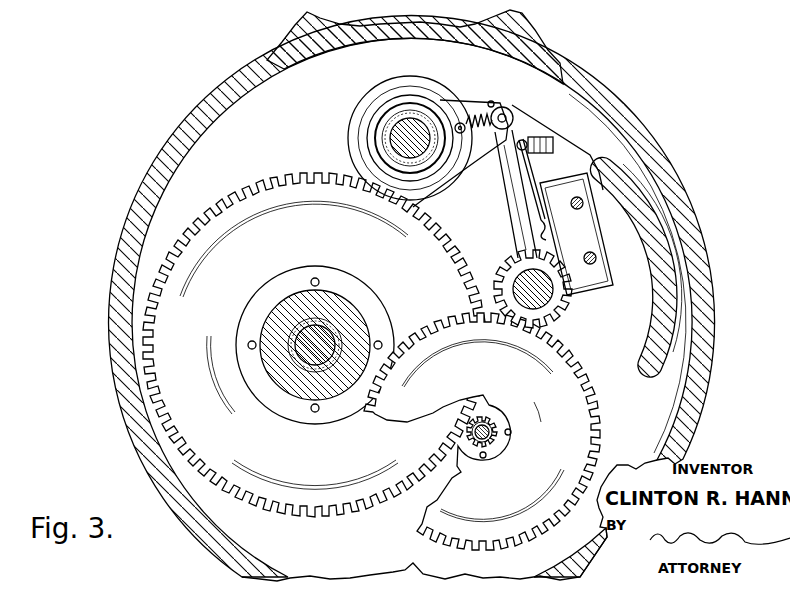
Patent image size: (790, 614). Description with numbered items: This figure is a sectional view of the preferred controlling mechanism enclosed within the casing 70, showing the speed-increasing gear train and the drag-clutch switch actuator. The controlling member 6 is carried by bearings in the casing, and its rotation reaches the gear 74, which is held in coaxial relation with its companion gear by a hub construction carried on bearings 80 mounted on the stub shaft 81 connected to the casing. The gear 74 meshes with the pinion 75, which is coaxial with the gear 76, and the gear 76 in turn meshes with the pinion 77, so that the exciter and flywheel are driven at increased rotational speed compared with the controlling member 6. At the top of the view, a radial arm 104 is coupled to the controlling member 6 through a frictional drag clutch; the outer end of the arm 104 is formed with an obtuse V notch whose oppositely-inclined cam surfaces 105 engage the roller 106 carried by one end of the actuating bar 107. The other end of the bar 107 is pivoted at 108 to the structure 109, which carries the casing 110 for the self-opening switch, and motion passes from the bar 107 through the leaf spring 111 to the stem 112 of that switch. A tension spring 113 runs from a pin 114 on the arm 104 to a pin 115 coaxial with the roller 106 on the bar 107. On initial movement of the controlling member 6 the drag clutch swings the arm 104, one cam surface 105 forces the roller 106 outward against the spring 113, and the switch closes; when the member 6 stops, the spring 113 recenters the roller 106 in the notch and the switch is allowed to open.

The controlling member 6 is at (397, 133).
The casing 70 is at (133, 229).
The gear 74 is at (283, 197).
The pinion 75 is at (461, 474).
The gear 76 is at (592, 428).
The pinion 77 is at (508, 268).
The bearings 80 is at (290, 368).
The stub shaft 81 is at (318, 358).
The radial arm 104 is at (444, 106).
The cam surfaces 105 is at (493, 104).
The roller 106 is at (513, 118).
The actuating bar 107 is at (520, 212).
The pivot 108 is at (530, 278).
The structure 109 is at (570, 153).
The casing 110 is at (588, 230).
The leaf spring 111 is at (536, 180).
The stem 112 is at (544, 213).
The tension spring 113 is at (475, 112).
The pin 114 is at (458, 133).
The pin 115 is at (505, 110).